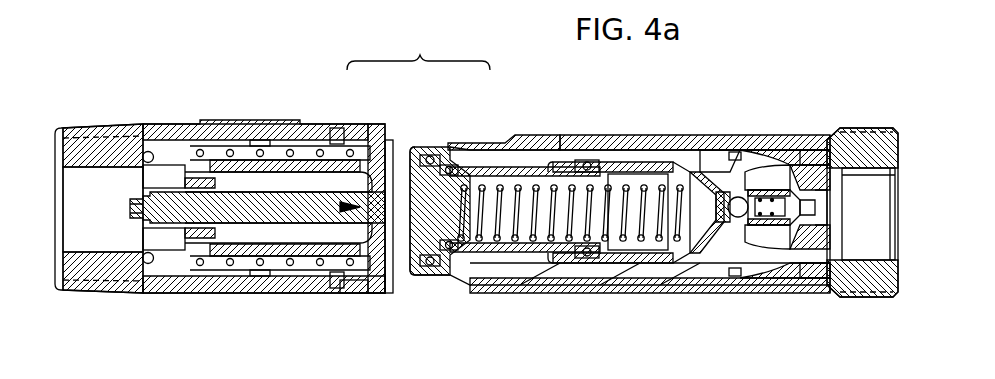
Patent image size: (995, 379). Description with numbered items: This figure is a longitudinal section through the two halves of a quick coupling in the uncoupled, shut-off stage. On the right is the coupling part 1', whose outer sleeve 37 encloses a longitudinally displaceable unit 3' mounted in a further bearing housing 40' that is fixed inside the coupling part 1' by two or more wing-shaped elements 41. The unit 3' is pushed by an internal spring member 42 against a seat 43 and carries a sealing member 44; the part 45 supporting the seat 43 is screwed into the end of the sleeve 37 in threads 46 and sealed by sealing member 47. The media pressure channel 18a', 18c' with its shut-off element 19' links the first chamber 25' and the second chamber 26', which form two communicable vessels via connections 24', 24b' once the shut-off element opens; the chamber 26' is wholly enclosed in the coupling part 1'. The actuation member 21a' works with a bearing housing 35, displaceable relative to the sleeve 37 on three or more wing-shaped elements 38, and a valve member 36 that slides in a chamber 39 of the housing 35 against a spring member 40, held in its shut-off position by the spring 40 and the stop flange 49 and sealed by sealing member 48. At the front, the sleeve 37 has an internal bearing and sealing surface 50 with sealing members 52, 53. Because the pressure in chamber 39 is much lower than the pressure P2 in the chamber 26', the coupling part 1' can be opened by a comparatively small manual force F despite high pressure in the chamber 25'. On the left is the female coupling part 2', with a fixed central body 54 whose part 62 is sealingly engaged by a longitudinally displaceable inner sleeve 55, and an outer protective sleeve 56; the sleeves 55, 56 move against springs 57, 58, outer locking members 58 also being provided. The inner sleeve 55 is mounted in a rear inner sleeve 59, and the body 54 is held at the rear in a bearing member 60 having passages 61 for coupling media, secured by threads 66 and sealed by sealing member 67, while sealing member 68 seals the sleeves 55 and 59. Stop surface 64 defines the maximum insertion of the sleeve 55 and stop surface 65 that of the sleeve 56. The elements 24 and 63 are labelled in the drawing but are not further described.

The coupling part 1' is at (620, 172).
The second coupling part 2' is at (261, 234).
The longitudinally displaceable unit 3' is at (720, 142).
The media pressure channel 18a' is at (772, 252).
The media pressure channel 18c' is at (812, 180).
The shut-off element 19' is at (701, 201).
The actuation member 21a' is at (579, 254).
The nut 24 is at (91, 189).
The connection 24' is at (866, 214).
The connection 24b' is at (720, 267).
The first chamber 25' is at (806, 250).
The second chamber 26' is at (610, 292).
The bearing member/housing 35 is at (585, 160).
The valve member 36 is at (490, 150).
The outer sleeve 37 is at (640, 160).
The wing-shaped elements 38 is at (665, 165).
The chamber 39 is at (635, 255).
The spring member 40 is at (525, 179).
The further bearing housing 40' is at (866, 117).
The wing-shaped elements 41 is at (850, 290).
The internal spring member 42 is at (818, 208).
The seat 43 is at (752, 150).
The sealing member 44 is at (775, 170).
The seat-supporting part 45 is at (896, 297).
The threads 46 is at (835, 295).
The sealing member 47 is at (736, 152).
The sealing member 48 is at (580, 160).
The stop member 49 is at (505, 285).
The internal bearing/sealing surface 50 is at (455, 265).
The sealing member 52 is at (445, 170).
The sealing member 53 is at (428, 155).
The fixed central body 54 is at (205, 170).
The inner sleeve 55 is at (345, 280).
The protective sleeve 56 is at (372, 130).
The spring 57 is at (243, 152).
The spring 58 is at (340, 140).
The rear inner sleeve 59 is at (215, 255).
The bearing member 60 is at (160, 150).
The passages 61 is at (150, 165).
The part of the central body 62 is at (395, 255).
The end face 63 is at (392, 263).
The stop surface 64 is at (335, 265).
The stop surface 65 is at (290, 150).
The threads 66 is at (120, 262).
The sealing member 67 is at (150, 250).
The sealing member 68 is at (262, 262).
The opening force F is at (330, 202).
The pressure P2 is at (560, 270).